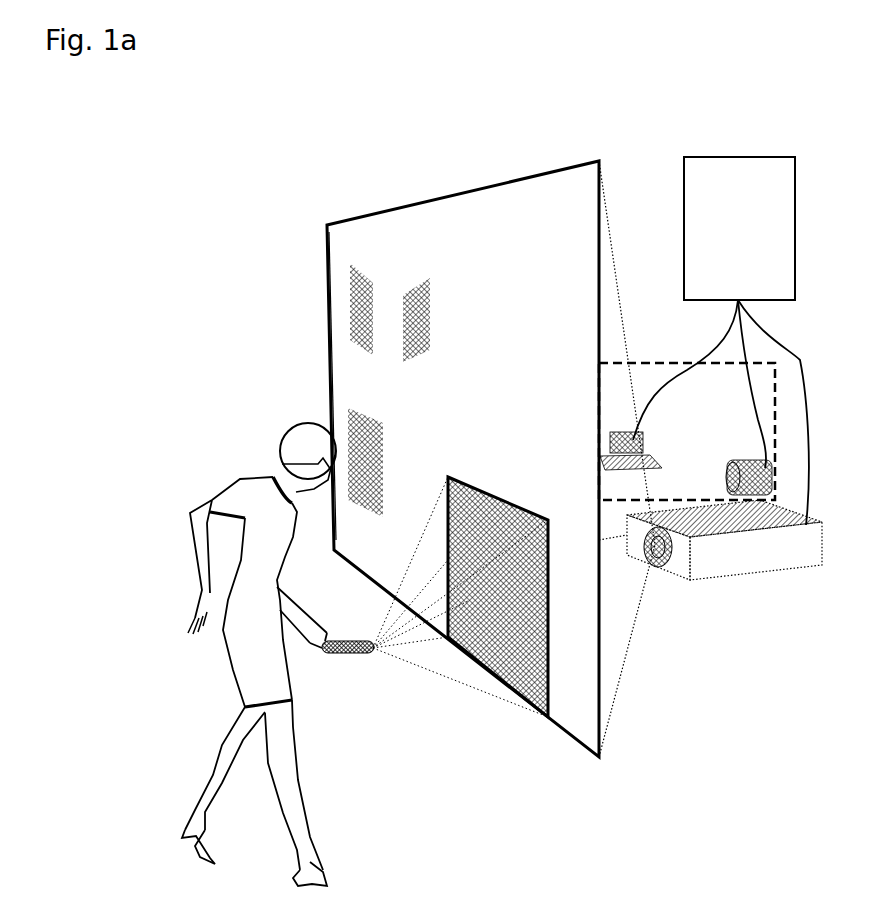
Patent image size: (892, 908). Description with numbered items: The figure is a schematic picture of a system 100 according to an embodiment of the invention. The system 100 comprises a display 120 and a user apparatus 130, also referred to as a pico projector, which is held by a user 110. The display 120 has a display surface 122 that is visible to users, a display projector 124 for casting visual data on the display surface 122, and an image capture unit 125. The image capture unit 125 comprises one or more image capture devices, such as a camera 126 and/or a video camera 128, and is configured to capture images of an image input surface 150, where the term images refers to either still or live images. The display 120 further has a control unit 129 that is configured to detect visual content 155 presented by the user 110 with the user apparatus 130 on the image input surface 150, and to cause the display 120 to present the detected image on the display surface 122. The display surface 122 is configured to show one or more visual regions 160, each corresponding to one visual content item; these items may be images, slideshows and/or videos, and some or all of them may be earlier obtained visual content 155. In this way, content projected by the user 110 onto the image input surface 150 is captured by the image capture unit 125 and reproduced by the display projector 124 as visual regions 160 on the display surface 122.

The system 100 is at (285, 97).
The user 110 is at (238, 654).
The display 120 is at (313, 203).
The display surface 122 is at (307, 378).
The display projector 124 is at (710, 459).
The image capture unit 125 is at (687, 392).
The camera 126 is at (737, 444).
The video camera 128 is at (633, 442).
The control unit 129 is at (739, 228).
The user apparatus 130 is at (435, 608).
The image input surface 150 is at (498, 633).
The visual content 155 is at (492, 606).
The visual regions 160 is at (325, 389).